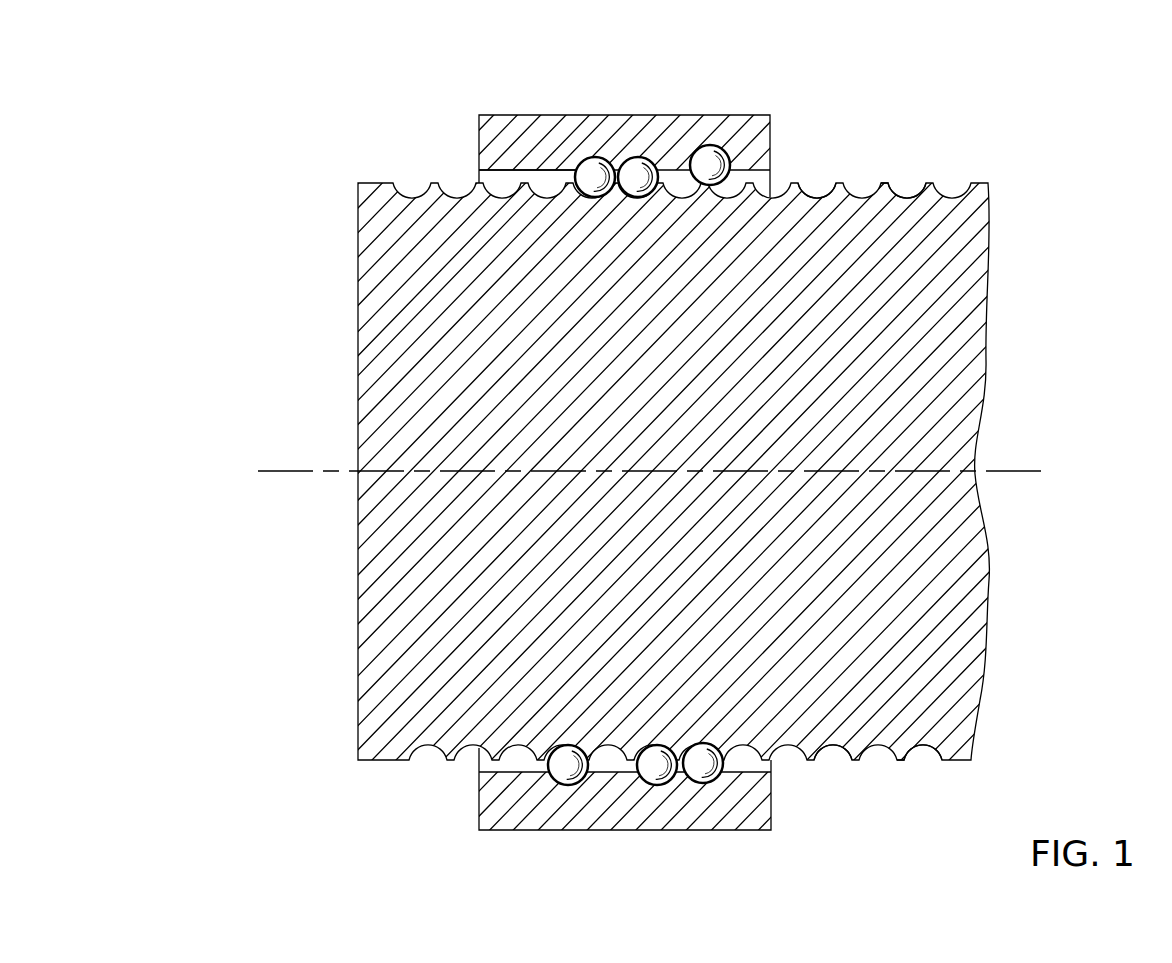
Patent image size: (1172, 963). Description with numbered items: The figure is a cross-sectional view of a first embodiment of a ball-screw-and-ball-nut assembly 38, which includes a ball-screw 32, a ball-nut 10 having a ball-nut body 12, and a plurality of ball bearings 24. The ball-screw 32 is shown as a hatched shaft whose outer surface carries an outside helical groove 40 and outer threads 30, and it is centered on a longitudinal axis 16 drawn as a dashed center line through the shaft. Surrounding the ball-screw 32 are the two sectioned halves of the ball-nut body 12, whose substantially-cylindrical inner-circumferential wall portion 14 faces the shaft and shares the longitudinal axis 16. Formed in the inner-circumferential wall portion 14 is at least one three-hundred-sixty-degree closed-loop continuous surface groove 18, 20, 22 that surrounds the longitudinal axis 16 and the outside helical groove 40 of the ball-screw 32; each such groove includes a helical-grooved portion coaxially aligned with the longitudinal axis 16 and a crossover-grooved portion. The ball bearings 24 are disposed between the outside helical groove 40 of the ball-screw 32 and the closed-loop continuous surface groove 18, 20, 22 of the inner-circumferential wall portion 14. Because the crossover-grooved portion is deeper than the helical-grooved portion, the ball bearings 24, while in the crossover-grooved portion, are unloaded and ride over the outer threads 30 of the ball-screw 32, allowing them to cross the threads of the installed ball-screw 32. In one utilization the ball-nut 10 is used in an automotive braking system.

The ball-nut 10 is at (586, 458).
The ball-nut body 12 is at (734, 110).
The inner-circumferential wall portion 14 is at (535, 171).
The longitudinal axis 16 is at (290, 471).
The 360-degree closed-loop continuous surface groove 18 is at (568, 786).
The 360-degree closed-loop continuous surface groove 20 is at (668, 788).
The 360-degree closed-loop continuous surface groove 22 is at (715, 786).
The ball bearings 24 is at (636, 170).
The outer threads 30 is at (844, 184).
The ball-screw 32 is at (962, 317).
The ball-screw-and-ball-nut assembly 38 is at (321, 130).
The outside helical groove 40 is at (907, 196).